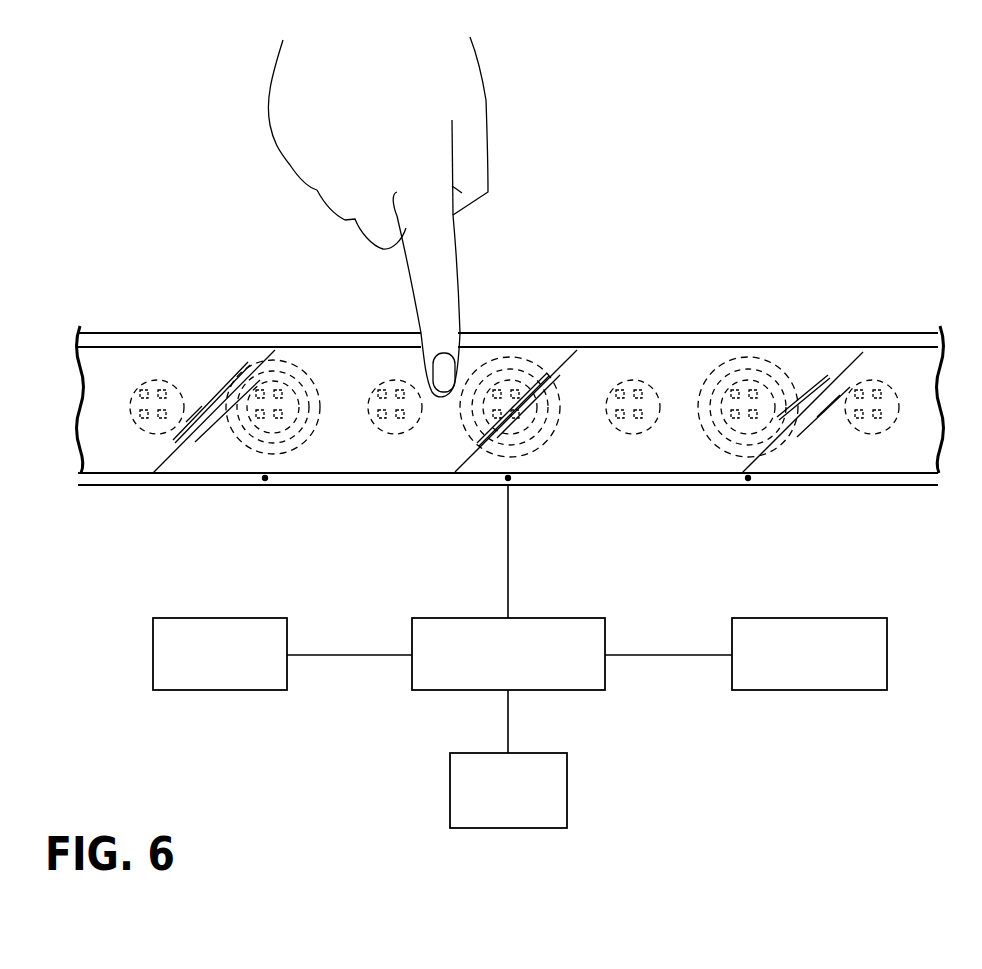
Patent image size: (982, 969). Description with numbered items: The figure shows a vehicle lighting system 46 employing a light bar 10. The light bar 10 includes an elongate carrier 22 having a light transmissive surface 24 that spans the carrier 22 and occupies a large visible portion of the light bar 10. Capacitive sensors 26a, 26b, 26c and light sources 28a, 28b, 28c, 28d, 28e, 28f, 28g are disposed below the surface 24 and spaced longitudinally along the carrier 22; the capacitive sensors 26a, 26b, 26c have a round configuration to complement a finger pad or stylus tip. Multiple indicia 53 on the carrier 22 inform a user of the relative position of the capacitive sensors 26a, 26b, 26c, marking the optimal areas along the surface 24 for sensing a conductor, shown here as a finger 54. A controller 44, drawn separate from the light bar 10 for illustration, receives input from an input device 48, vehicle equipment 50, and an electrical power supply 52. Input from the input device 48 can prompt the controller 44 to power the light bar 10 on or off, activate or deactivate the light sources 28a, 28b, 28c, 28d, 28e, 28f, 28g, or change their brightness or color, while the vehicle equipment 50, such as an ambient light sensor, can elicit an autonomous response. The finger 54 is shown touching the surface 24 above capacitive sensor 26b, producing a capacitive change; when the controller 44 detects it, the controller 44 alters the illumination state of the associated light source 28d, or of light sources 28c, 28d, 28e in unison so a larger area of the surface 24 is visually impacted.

The light bar 10 is at (874, 276).
The vehicle lighting system 46 is at (886, 158).
The carrier 22 is at (189, 342).
The surface 24 is at (132, 367).
The capacitive sensor 26a is at (736, 352).
The capacitive sensor 26b is at (514, 352).
The capacitive sensor 26c is at (278, 352).
The light source 28a is at (872, 434).
The light source 28b is at (758, 456).
The light source 28c is at (633, 434).
The light source 28d is at (521, 456).
The light source 28e is at (396, 434).
The light source 28f is at (283, 455).
The light source 28g is at (157, 434).
The controller 44 is at (580, 691).
The input device 48 is at (450, 797).
The vehicle equipment 50 is at (820, 691).
The electrical power supply 52 is at (256, 691).
The indicia 53 is at (264, 480).
The finger 54 is at (277, 154).